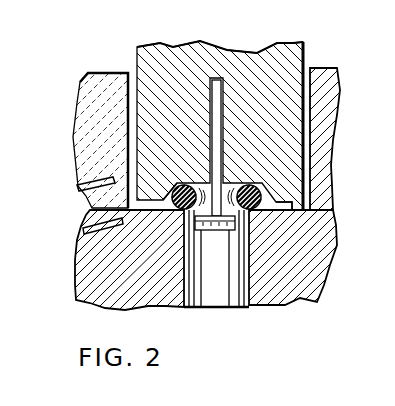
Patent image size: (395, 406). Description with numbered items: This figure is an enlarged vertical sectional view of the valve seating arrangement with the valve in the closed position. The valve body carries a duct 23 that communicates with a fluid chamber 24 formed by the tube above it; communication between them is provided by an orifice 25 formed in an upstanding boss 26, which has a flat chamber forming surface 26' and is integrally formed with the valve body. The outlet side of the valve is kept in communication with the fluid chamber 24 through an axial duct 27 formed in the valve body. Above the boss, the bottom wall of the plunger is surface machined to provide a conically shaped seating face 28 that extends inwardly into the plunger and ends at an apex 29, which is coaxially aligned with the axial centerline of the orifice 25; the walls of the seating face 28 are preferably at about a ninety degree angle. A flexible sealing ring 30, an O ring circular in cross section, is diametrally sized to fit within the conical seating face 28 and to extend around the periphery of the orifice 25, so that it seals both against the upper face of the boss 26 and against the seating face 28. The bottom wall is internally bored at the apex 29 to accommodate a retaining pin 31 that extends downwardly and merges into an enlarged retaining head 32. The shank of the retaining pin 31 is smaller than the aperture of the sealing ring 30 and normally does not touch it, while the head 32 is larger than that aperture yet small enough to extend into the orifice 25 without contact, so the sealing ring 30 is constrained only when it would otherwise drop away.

The duct 23 is at (227, 298).
The fluid chamber 24 is at (310, 113).
The orifice 25 is at (284, 217).
The upstanding boss 26 is at (88, 221).
The flat chamber forming surface 26' is at (68, 169).
The axial duct 27 is at (306, 205).
The conically shaped seating face 28 is at (233, 168).
The apex 29 is at (306, 62).
The sealing ring 30 is at (166, 189).
The retaining pin 31 is at (207, 80).
The retaining head 32 is at (213, 228).